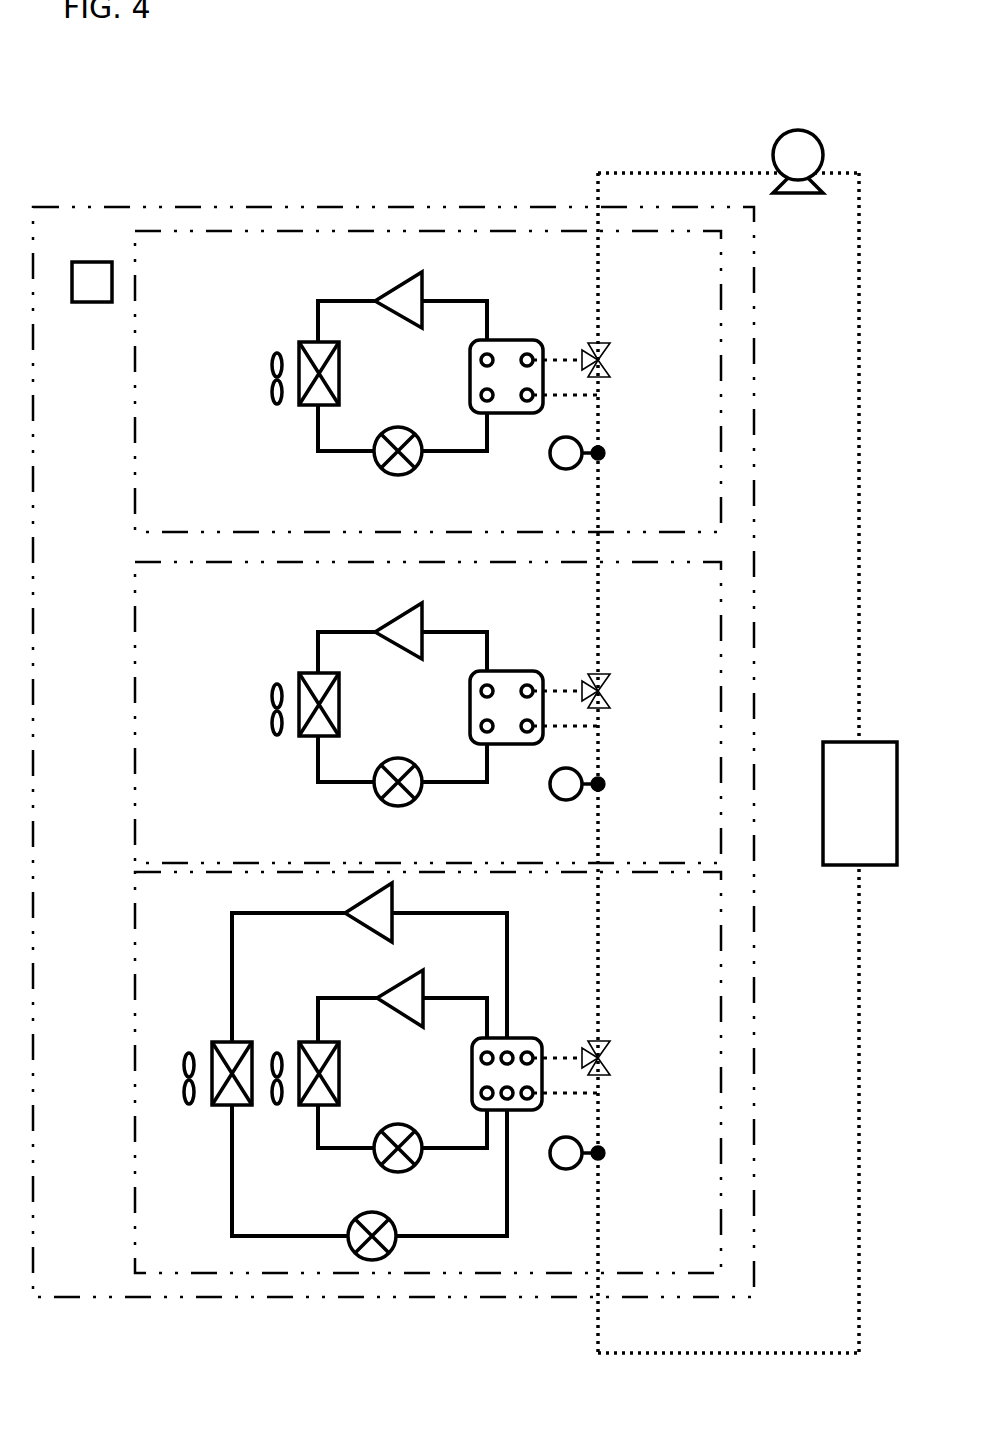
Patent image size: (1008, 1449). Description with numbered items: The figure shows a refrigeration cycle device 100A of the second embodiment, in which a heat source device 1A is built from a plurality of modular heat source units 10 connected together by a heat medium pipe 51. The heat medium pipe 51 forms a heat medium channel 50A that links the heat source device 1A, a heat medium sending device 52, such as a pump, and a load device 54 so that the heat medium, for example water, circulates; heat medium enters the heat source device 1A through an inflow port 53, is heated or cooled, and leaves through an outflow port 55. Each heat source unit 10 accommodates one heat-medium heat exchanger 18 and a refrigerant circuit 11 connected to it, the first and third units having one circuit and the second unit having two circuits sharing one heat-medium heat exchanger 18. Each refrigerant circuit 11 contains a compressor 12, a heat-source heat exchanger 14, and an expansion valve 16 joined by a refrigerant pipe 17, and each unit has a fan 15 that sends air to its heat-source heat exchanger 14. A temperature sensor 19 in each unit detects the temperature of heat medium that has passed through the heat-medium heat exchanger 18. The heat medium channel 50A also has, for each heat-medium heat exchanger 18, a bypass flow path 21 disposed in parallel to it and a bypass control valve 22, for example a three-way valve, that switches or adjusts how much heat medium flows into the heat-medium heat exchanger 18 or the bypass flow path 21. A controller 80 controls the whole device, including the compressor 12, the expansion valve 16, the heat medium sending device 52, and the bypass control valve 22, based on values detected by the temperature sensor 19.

The refrigeration cycle device 100A is at (360, 145).
The heat source device 1A is at (282, 207).
The controller 80 is at (88, 303).
The heat source unit 10 is at (133, 410).
The refrigerant pipe 17 is at (320, 299).
The compressor 12 is at (400, 288).
The refrigerant circuit 11 is at (470, 296).
The heat-medium heat exchanger 18 is at (526, 338).
The bypass control valve 22 is at (603, 344).
The bypass flow path 21 is at (600, 386).
The heat-source heat exchanger 14 is at (340, 382).
The fan 15 is at (278, 407).
The expansion valve 16 is at (398, 476).
The temperature sensor 19 is at (556, 467).
The inflow port 53 is at (596, 200).
The heat medium pipe 51 is at (662, 172).
The heat medium sending device 52 is at (805, 195).
The heat medium channel 50A is at (856, 170).
The load device 54 is at (842, 868).
The outflow port 55 is at (588, 1298).